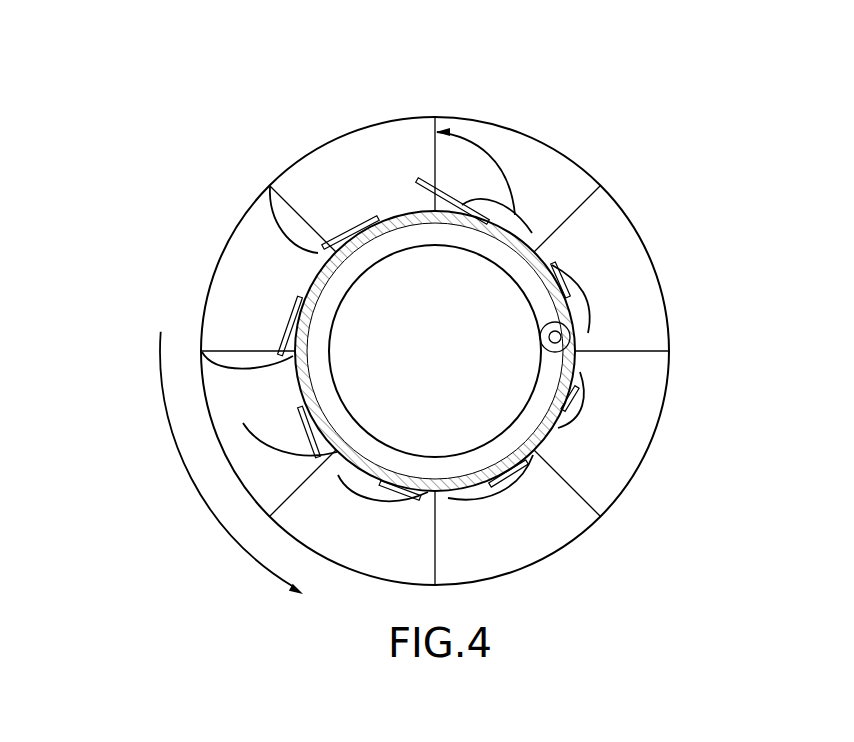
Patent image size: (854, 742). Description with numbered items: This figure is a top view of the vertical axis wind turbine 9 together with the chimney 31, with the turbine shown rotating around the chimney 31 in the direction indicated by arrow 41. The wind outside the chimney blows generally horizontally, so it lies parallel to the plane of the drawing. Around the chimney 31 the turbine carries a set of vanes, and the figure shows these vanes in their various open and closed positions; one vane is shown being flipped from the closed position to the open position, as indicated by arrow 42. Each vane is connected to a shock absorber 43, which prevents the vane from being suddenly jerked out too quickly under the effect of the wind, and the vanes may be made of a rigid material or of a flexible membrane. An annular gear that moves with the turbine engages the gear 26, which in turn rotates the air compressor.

The vertical axis wind turbine 9 is at (602, 231).
The gear 26 is at (555, 352).
The chimney 31 is at (377, 255).
The arrow 41 is at (165, 433).
The arrow 42 is at (492, 155).
The shock absorbers 43 is at (345, 232).